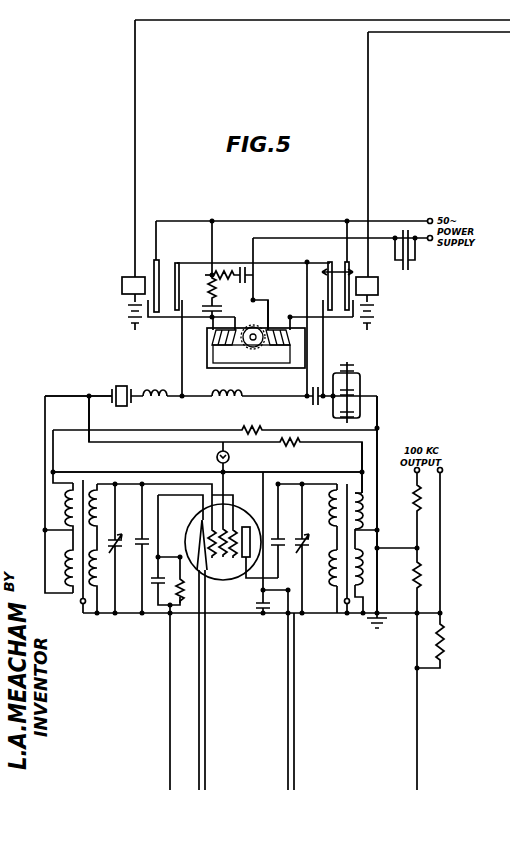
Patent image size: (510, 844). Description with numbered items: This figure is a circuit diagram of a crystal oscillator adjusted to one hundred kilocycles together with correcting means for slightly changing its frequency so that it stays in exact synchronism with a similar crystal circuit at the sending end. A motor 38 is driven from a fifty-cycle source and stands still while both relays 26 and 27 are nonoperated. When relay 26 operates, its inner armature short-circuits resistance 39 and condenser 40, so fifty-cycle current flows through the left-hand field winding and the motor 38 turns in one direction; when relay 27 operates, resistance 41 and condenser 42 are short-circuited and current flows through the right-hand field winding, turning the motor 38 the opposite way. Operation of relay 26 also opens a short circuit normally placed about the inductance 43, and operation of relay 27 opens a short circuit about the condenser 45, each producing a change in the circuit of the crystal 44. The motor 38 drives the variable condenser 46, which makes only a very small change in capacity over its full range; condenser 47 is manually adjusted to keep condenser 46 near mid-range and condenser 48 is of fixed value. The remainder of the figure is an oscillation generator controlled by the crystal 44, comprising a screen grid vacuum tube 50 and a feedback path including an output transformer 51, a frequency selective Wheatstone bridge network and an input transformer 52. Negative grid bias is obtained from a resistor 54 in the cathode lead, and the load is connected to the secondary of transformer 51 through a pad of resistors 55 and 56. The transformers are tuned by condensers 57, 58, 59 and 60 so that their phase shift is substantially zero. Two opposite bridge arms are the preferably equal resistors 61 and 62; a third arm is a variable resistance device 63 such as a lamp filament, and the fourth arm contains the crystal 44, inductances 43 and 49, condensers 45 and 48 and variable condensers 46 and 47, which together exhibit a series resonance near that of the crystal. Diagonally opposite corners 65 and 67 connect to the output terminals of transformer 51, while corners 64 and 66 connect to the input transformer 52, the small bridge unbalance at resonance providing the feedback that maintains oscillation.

The relay 26 is at (122, 286).
The relay 27 is at (378, 283).
The motor 38 is at (258, 368).
The resistance 39 is at (210, 275).
The condenser 40 is at (210, 291).
The resistance 41 is at (229, 270).
The condenser 42 is at (250, 268).
The inductance 43 is at (222, 401).
The crystal 44 is at (122, 385).
The condenser 45 is at (313, 388).
The variable condenser 46 is at (352, 368).
The condenser 47 is at (352, 393).
The condenser 48 is at (350, 412).
The inductance 49 is at (158, 402).
The vacuum tube 50 is at (217, 578).
The output transformer 51 is at (348, 538).
The input transformer 52 is at (78, 548).
The resistor 54 is at (185, 606).
The resistor 55 is at (424, 574).
The resistor 56 is at (445, 643).
The condenser 57 is at (118, 547).
The condenser 58 is at (140, 535).
The condenser 59 is at (282, 538).
The condenser 60 is at (305, 546).
The resistor 61 is at (253, 428).
The resistor 62 is at (290, 444).
The variable resistance device 63 is at (230, 457).
The bridge corner 64 is at (90, 393).
The bridge corner 65 is at (364, 473).
The bridge corner 66 is at (52, 472).
The bridge corner 67 is at (379, 428).